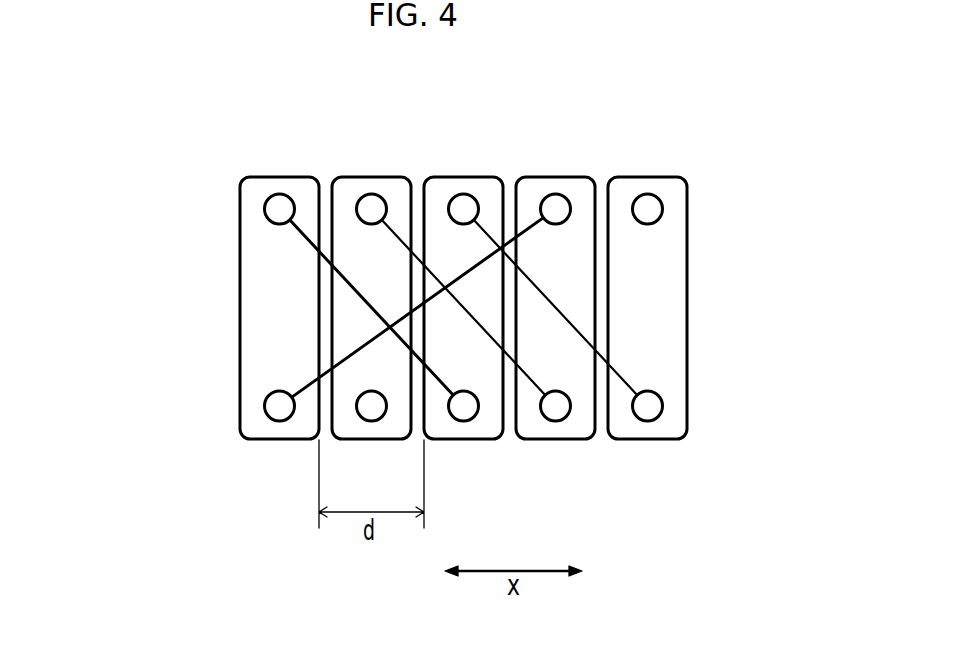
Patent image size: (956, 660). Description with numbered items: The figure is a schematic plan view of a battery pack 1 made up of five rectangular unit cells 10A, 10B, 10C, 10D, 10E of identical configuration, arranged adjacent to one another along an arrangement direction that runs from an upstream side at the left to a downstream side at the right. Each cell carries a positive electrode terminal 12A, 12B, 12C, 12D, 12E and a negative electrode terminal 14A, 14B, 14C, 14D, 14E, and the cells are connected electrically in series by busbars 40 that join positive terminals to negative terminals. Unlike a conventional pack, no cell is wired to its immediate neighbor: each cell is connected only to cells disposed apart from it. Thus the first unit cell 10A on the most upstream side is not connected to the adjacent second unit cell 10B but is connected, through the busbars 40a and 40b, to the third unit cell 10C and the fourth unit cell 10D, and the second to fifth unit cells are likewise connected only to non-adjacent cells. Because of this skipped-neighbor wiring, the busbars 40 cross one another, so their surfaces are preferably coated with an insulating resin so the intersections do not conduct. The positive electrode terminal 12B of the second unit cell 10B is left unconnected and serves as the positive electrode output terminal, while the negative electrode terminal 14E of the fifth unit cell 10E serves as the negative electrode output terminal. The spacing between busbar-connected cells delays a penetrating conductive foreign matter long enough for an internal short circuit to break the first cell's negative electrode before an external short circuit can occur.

The battery pack 1 is at (153, 103).
The first unit cell 10A is at (291, 164).
The second unit cell 10B is at (381, 164).
The third unit cell 10C is at (474, 164).
The fourth unit cell 10D is at (566, 164).
The fifth unit cell 10E is at (659, 164).
The positive electrode terminal 12A is at (264, 407).
The positive electrode terminal 12B is at (371, 422).
The positive electrode terminal 12C is at (464, 422).
The positive electrode terminal 12D is at (556, 422).
The positive electrode terminal 12E is at (648, 422).
The negative electrode terminal 14A is at (264, 209).
The negative electrode terminal 14B is at (361, 194).
The negative electrode terminal 14C is at (450, 194).
The negative electrode terminal 14D is at (542, 194).
The negative electrode terminal 14E is at (634, 194).
The busbar 40 is at (431, 378).
The first connecting wire 40a is at (306, 237).
The second connecting wire 40b is at (311, 384).